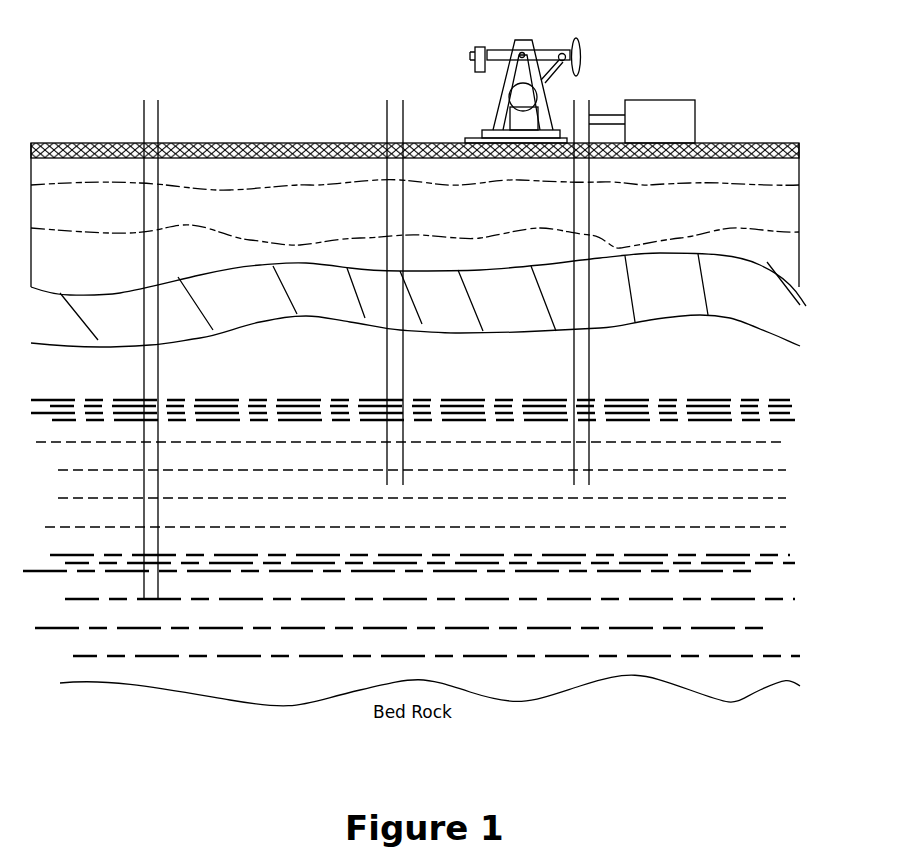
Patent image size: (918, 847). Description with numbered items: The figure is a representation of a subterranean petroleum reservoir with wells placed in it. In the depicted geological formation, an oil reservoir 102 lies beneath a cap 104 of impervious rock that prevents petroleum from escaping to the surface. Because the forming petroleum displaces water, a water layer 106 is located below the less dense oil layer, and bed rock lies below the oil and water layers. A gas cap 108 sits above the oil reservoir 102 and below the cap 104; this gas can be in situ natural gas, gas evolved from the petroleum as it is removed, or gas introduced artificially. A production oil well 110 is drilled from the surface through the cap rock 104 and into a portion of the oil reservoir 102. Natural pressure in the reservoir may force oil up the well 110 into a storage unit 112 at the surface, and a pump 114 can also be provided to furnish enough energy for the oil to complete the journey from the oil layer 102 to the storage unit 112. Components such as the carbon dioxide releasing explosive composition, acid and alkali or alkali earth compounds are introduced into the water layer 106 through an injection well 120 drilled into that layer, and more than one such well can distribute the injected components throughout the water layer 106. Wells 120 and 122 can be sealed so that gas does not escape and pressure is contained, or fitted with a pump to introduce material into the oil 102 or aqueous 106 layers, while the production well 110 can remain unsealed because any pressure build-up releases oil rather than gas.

The oil reservoir 102 is at (411, 484).
The cap 104 is at (418, 300).
The water layer 106 is at (411, 605).
The gas cap 108 is at (413, 388).
The production oil well 110 is at (585, 84).
The storage unit 112 is at (642, 121).
The pump 114 is at (540, 39).
The injection well 120 is at (151, 66).
The well 122 is at (395, 66).